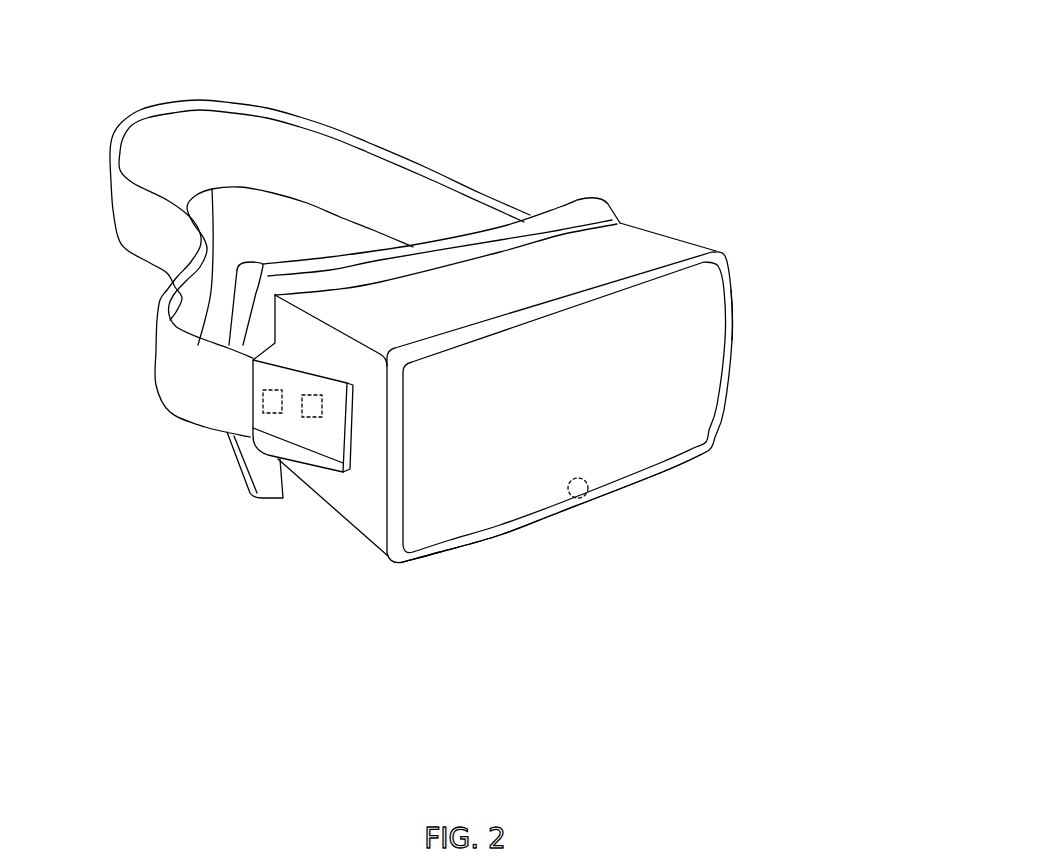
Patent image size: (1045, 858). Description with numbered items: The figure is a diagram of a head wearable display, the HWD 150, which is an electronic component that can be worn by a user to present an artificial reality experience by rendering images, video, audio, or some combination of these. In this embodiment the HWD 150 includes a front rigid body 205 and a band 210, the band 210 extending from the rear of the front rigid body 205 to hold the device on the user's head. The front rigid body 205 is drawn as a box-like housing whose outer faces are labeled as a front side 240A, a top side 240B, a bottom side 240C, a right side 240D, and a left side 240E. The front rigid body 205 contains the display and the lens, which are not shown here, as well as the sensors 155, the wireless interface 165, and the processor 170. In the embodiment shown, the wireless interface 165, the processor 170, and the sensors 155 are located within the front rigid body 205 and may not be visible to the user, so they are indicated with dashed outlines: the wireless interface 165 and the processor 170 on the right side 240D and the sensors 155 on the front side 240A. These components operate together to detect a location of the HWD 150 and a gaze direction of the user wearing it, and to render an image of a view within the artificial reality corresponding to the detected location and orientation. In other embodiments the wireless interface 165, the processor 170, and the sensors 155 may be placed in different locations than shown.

The HWD 150 is at (37, 42).
The band 210 is at (425, 167).
The front rigid body 205 is at (723, 247).
The front side 240A is at (645, 439).
The top side 240B is at (345, 299).
The bottom side 240C is at (305, 542).
The right side 240D is at (355, 505).
The left side 240E is at (703, 226).
The sensors 155 is at (582, 512).
The wireless interface 165 is at (242, 395).
The processor 170 is at (285, 428).